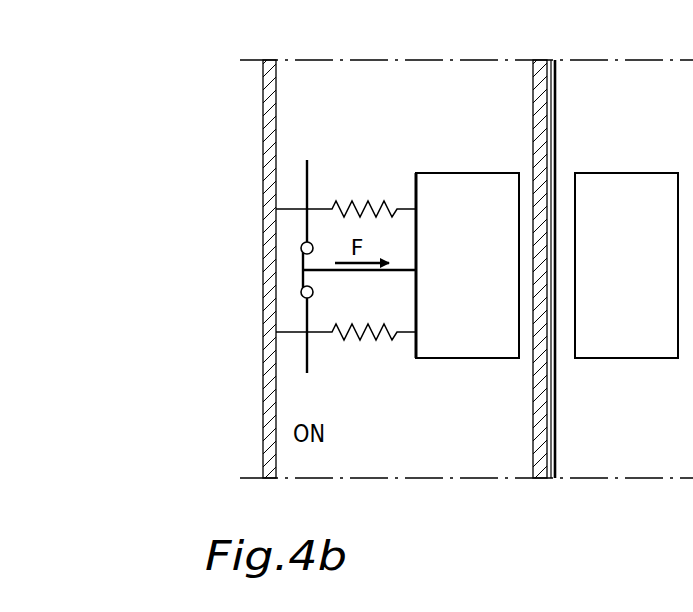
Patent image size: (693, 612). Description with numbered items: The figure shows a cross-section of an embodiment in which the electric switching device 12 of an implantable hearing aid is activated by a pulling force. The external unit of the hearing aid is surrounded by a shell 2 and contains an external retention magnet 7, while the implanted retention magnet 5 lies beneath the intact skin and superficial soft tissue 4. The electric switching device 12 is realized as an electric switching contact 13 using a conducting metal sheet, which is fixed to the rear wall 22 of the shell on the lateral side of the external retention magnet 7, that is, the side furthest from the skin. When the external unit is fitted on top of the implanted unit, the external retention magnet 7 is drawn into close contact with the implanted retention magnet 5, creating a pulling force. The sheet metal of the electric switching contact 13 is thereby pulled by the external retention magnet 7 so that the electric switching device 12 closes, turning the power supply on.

The shell 2 is at (238, 129).
The skin and superficial soft tissue 4 is at (638, 120).
The implanted retention magnet 5 is at (638, 271).
The external retention magnet 7 is at (479, 271).
The electric switching device 12 is at (403, 180).
The electric switching contact 13 is at (328, 281).
The rear wall 22 is at (277, 242).